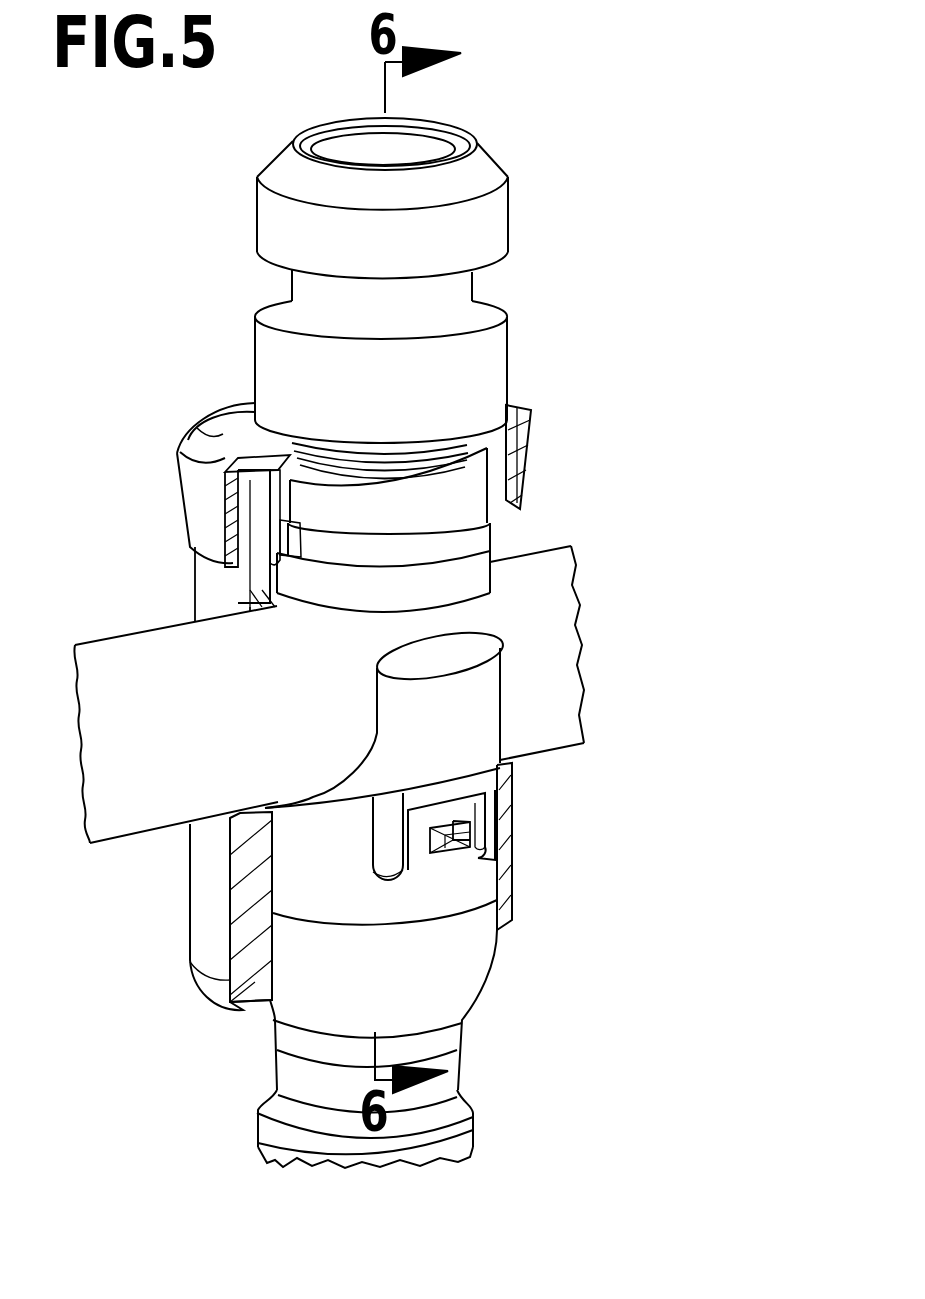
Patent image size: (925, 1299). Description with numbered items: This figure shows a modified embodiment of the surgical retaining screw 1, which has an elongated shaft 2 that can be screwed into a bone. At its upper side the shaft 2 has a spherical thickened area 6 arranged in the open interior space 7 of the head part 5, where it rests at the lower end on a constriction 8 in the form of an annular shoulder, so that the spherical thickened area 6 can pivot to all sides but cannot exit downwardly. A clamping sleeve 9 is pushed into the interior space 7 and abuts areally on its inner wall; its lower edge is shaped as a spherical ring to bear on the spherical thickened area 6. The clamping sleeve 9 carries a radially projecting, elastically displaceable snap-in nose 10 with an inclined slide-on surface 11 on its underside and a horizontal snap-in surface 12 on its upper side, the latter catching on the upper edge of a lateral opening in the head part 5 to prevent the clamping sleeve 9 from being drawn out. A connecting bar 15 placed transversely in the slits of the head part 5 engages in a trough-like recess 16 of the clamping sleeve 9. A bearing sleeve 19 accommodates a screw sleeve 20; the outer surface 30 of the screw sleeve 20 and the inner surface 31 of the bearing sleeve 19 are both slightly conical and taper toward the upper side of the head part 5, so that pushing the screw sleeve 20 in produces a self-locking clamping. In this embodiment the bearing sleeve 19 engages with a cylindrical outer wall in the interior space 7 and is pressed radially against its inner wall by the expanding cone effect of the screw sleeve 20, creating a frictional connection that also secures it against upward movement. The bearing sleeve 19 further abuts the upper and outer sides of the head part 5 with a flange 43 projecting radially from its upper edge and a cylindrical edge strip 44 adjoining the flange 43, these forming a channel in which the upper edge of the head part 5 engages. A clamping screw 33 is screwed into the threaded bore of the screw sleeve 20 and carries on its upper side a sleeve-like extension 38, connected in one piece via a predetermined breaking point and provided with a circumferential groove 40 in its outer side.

The surgical retaining screw 1 is at (350, 643).
The elongated shaft 2 is at (412, 1129).
The head part 5 is at (196, 911).
The spherical thickened area 6 is at (388, 938).
The interior space 7 is at (338, 837).
The constriction 8 is at (271, 977).
The clamping sleeve 9 is at (433, 912).
The snap-in nose 10 is at (519, 830).
The inclined slide-on surface 11 is at (527, 860).
The horizontal snap-in surface 12 is at (508, 819).
The connecting bar 15 is at (329, 694).
The trough-like recess 16 is at (386, 716).
The bearing sleeve 19 is at (313, 489).
The screw sleeve 20 is at (436, 558).
The outer surface 30 is at (389, 491).
The inner surface 31 is at (198, 538).
The clamping screw 33 is at (429, 407).
The sleeve-like extension 38 is at (441, 198).
The circumferential groove 40 is at (411, 344).
The flange 43 is at (196, 488).
The cylindrical edge strip 44 is at (173, 544).